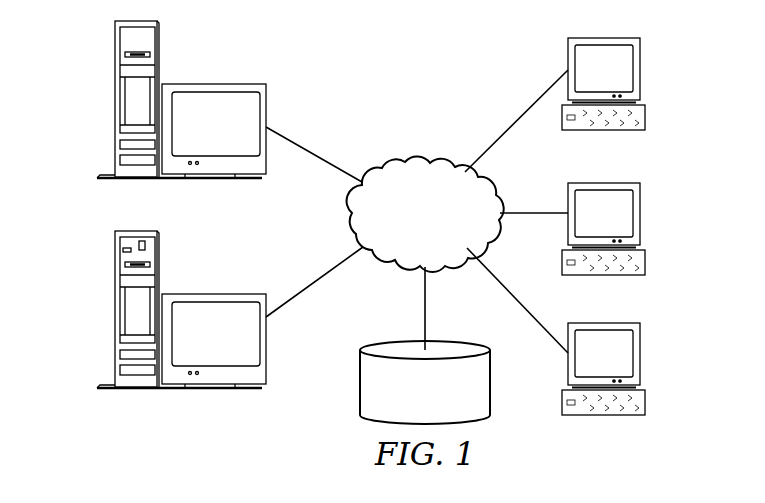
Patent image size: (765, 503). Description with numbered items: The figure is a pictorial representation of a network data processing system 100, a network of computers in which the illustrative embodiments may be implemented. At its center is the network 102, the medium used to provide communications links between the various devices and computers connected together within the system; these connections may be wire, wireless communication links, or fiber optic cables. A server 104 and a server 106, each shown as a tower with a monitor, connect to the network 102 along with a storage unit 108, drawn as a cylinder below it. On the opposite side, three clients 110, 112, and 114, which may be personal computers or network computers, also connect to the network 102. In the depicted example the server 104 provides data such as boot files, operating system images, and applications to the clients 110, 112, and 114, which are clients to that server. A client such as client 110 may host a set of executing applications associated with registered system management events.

The network data processing system 100 is at (477, 59).
The network 102 is at (397, 162).
The server 104 is at (115, 100).
The server 106 is at (115, 310).
The storage unit 108 is at (360, 392).
The client 110 is at (640, 70).
The client 112 is at (640, 213).
The client 114 is at (640, 355).